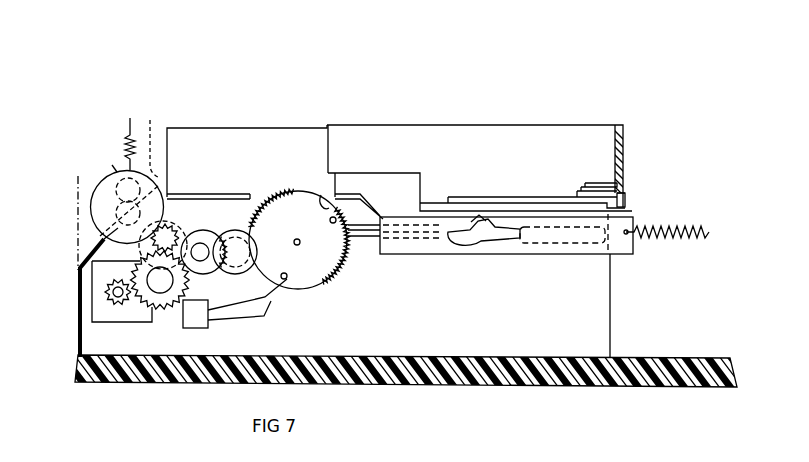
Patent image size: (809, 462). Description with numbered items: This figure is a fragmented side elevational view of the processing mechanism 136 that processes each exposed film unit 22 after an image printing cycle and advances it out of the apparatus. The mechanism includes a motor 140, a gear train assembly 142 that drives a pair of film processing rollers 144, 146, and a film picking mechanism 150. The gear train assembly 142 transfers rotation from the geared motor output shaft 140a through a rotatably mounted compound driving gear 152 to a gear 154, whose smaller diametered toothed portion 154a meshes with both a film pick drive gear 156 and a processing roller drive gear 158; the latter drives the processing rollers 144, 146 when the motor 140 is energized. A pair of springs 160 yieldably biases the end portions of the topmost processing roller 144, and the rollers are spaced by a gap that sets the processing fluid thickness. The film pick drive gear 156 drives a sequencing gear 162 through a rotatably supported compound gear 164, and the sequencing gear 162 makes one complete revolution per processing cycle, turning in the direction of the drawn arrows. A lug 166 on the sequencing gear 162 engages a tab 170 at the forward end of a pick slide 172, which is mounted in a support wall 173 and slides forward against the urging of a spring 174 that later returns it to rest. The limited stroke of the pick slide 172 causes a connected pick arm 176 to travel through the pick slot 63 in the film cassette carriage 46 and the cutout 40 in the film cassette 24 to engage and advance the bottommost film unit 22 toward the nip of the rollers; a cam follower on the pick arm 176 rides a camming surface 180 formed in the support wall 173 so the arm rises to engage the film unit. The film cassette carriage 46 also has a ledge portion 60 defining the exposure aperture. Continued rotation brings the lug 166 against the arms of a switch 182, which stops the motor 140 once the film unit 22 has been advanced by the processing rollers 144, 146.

The processing mechanism 136 is at (237, 98).
The motor 140 is at (95, 318).
The geared motor output shaft 140a is at (106, 292).
The gear train assembly 142 is at (226, 172).
The processing roller 144 is at (159, 144).
The processing roller 146 is at (102, 160).
The film picking mechanism 150 is at (464, 268).
The compound driving gear 152 is at (158, 307).
The gear 154 is at (172, 224).
The smaller diametered toothed portion 154a is at (181, 232).
The film pick drive gear 156 is at (215, 273).
The processing roller drive gear 158 is at (103, 210).
The spring 160 is at (130, 118).
The sequencing gear 162 is at (309, 297).
The compound gear 164 is at (257, 247).
The lug 166 is at (319, 244).
The tab 170 is at (324, 209).
The pick slide 172 is at (358, 176).
The support wall 173 is at (611, 307).
The spring 174 is at (690, 228).
The pick arm 176 is at (512, 249).
The camming surface 180 is at (362, 238).
The switch 182 is at (204, 322).
The photosensitive film unit 22 is at (583, 172).
The film cassette 24 is at (298, 130).
The cutout 40 is at (628, 188).
The film cassette carriage 46 is at (484, 138).
The ledge portion 60 is at (248, 197).
The pick slot 63 is at (629, 197).